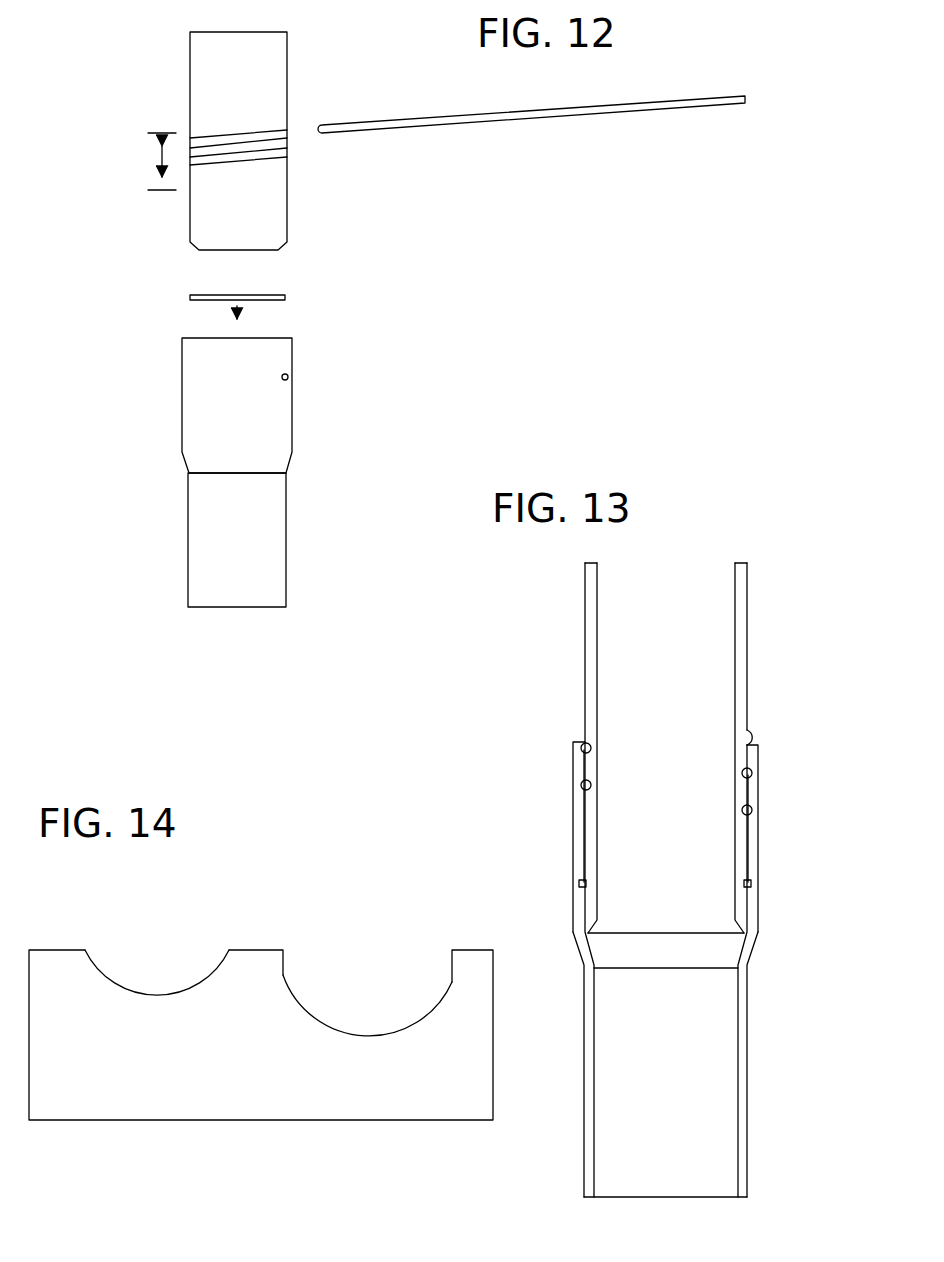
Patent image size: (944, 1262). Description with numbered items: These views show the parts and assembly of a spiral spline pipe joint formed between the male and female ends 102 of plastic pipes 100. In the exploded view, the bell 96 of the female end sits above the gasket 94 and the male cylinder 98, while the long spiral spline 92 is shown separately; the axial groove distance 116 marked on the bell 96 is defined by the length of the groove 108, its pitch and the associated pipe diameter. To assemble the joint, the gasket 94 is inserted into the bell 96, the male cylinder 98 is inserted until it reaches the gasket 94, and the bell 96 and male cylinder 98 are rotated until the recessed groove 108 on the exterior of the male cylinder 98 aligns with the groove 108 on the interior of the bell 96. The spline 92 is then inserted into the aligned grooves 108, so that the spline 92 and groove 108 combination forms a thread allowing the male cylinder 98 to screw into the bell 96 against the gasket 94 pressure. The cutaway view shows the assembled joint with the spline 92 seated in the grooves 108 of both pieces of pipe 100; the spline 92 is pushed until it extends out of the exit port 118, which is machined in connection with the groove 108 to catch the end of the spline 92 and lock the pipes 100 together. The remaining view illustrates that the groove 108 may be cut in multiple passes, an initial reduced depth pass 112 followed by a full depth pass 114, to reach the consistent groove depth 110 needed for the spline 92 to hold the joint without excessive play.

In FIG. 12, the spline 92 is at (378, 120).
In FIG. 13, the spline 92 is at (752, 775).
In FIG. 12, the gasket 94 is at (262, 296).
In FIG. 13, the gasket 94 is at (752, 885).
In FIG. 12, the bell 96 is at (287, 212).
In FIG. 13, the bell 96 is at (760, 855).
In FIG. 12, the male cylinder 98 is at (293, 417).
In FIG. 13, the male cylinder 98 is at (733, 843).
In FIG. 13, the plastic pipe 100 is at (747, 605).
In FIG. 12, the end 102 is at (146, 242).
In FIG. 13, the end 102 is at (587, 898).
In FIG. 13, the spiral spline groove 108 is at (749, 738).
In FIG. 14, the spiral spline groove 108 is at (190, 935).
In FIG. 14, the groove depth 110 is at (447, 982).
In FIG. 14, the initial reduced depth pass 112 is at (188, 982).
In FIG. 14, the full depth pass 114 is at (402, 1025).
In FIG. 12, the axial groove distance 116 is at (162, 155).
In FIG. 12, the exit port 118 is at (289, 373).